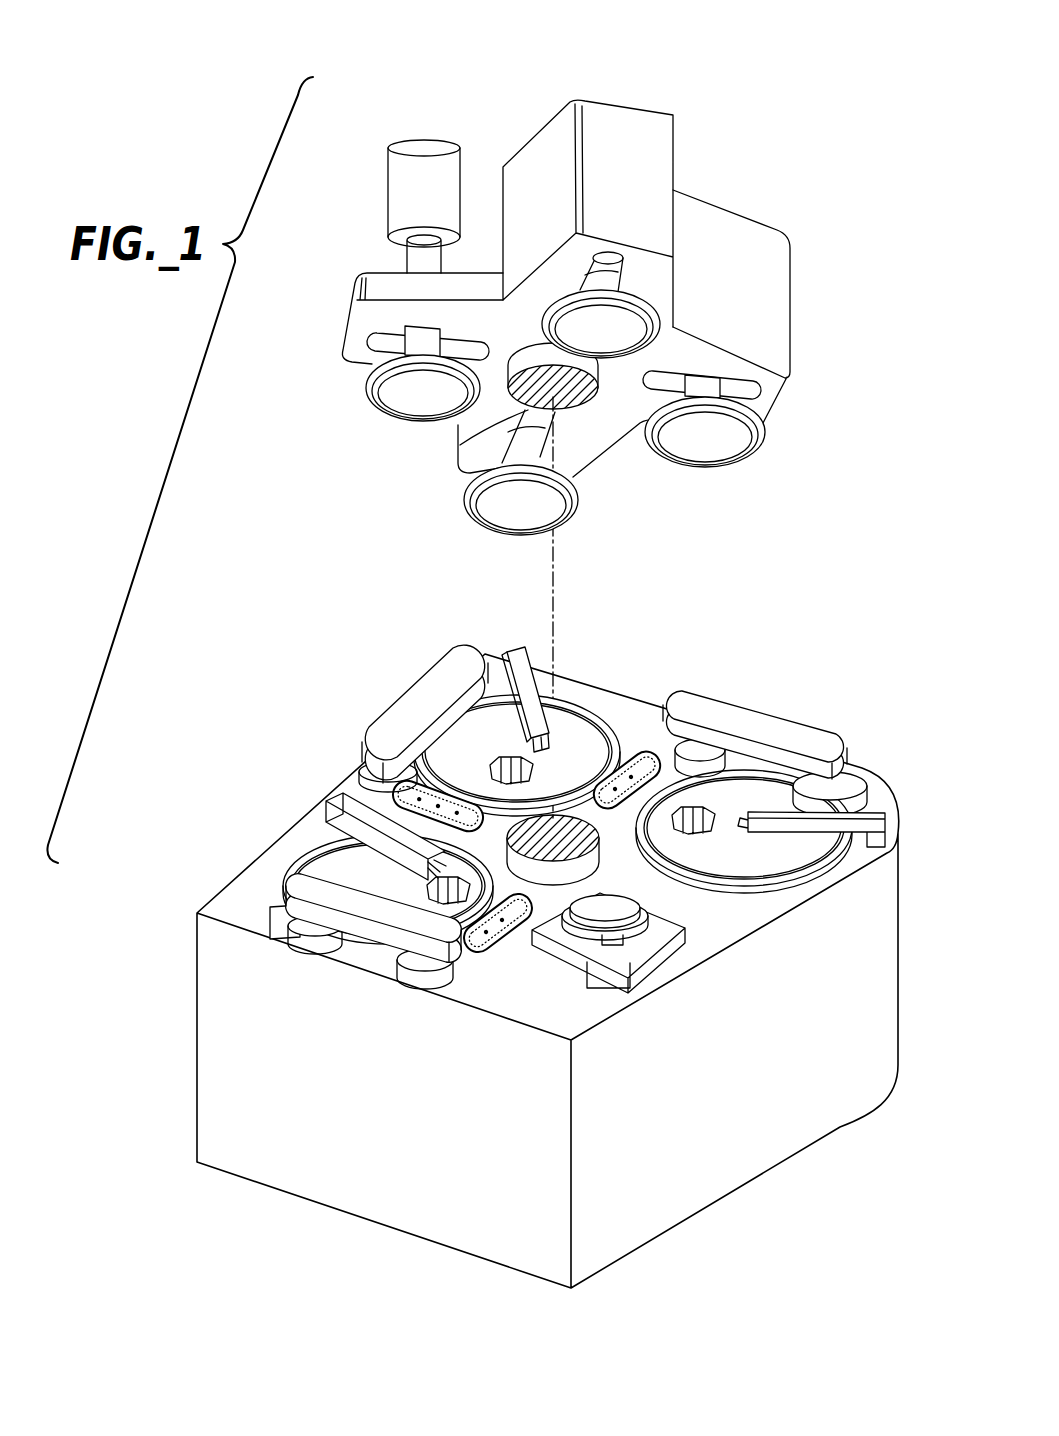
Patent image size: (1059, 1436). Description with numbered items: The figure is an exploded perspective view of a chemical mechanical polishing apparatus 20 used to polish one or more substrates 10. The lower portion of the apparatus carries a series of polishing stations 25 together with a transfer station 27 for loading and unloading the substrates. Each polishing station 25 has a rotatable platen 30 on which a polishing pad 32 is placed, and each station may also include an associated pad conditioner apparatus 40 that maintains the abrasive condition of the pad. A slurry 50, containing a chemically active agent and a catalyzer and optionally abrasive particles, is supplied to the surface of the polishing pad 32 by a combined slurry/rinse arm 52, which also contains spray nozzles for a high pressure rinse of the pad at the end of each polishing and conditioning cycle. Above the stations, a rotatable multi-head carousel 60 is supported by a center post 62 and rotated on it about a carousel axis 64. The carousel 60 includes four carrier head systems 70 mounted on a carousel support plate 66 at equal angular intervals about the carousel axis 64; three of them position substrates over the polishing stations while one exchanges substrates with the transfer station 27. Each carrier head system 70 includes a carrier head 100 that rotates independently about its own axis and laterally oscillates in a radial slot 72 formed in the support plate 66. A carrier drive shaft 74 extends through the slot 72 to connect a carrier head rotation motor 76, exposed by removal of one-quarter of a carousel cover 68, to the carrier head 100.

The substrate 10 is at (613, 323).
The chemical mechanical polishing apparatus 20 is at (728, 55).
The polishing station 25 is at (540, 775).
The transfer station 27 is at (571, 982).
The rotatable platen 30 is at (575, 712).
The polishing pad 32 is at (563, 718).
The pad conditioner apparatus 40 is at (399, 692).
The slurry 50 is at (495, 767).
The slurry/rinse arm 52 is at (516, 650).
The multi-head carousel 60 is at (814, 338).
The center post 62 is at (570, 400).
The carousel axis 64 is at (557, 578).
The carousel support plate 66 is at (343, 333).
The carousel cover 68 is at (675, 138).
The carrier head system 70 is at (561, 414).
The radial slot 72 is at (627, 261).
The carrier drive shaft 74 is at (593, 270).
The carrier head rotation motor 76 is at (388, 178).
The carrier head 100 is at (640, 305).